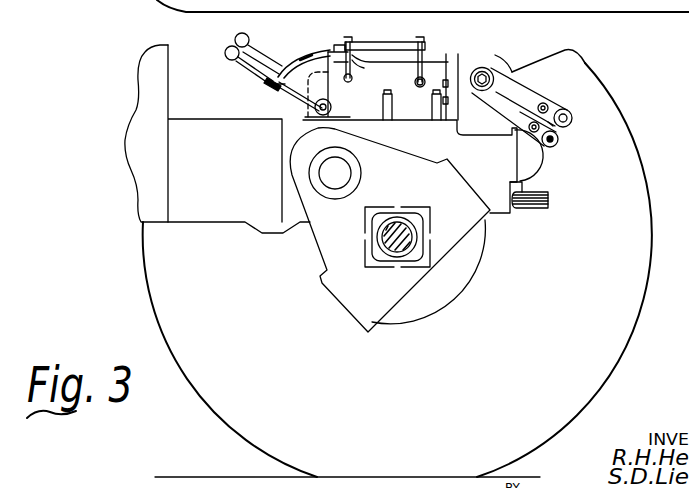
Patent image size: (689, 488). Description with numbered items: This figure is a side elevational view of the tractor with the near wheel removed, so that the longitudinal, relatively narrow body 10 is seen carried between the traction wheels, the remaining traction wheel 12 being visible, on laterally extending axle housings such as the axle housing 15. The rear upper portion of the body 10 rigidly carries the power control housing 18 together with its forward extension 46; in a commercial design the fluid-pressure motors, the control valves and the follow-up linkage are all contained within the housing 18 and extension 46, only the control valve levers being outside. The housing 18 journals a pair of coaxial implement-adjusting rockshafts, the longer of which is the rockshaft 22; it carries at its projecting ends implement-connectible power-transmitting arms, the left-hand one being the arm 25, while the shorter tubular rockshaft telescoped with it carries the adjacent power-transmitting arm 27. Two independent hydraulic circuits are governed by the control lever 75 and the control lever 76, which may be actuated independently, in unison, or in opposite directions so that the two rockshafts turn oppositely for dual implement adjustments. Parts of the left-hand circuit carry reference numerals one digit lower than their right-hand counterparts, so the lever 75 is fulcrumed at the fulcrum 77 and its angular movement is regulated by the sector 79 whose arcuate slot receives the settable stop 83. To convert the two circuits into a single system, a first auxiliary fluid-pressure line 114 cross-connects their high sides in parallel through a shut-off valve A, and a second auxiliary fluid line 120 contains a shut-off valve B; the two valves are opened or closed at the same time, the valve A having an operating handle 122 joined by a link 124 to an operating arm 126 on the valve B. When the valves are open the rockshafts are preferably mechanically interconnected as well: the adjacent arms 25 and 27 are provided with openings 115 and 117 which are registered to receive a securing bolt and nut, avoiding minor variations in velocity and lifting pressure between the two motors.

The body 10 is at (199, 216).
The traction wheel 12 is at (213, 413).
The axle housing 15 is at (370, 276).
The power control housing 18 is at (466, 58).
The rockshaft 22 is at (491, 56).
The power-transmitting arm 25 is at (512, 75).
The power-transmitting arm 27 is at (528, 98).
The forward extension 46 is at (368, 110).
The control lever 75 is at (249, 43).
The control lever 76 is at (241, 36).
The fulcrum 77 is at (318, 115).
The sector 79 is at (298, 97).
The settable stop 83 is at (274, 87).
The first auxiliary fluid-pressure line 114 is at (372, 66).
The opening 115 is at (526, 140).
The opening 117 is at (549, 105).
The second auxiliary fluid line 120 is at (414, 83).
The operating handle 122 is at (351, 40).
The link 124 is at (396, 42).
The operating arm 126 is at (423, 38).
The shut-off valve A is at (339, 37).
The shut-off valve B is at (434, 48).